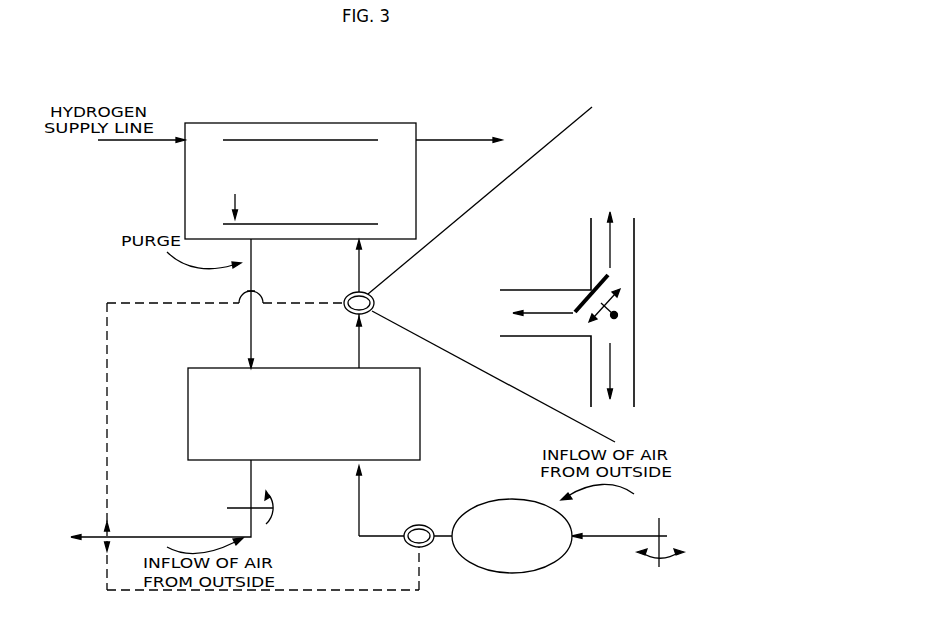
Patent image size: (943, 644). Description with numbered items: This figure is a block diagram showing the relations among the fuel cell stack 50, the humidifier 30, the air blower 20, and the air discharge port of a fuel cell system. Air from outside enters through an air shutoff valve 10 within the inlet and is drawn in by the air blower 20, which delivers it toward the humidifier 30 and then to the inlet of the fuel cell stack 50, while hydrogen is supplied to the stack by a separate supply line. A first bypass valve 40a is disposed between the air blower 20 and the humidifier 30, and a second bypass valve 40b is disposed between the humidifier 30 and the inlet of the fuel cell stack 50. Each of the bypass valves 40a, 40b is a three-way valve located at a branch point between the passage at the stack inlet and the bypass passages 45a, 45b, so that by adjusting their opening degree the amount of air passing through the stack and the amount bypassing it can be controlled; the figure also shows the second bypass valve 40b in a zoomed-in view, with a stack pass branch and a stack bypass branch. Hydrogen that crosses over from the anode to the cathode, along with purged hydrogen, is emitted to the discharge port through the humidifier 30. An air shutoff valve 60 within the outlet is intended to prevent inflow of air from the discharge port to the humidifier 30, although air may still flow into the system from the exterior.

The air shutoff valve within an inlet 10 is at (662, 525).
The air blower 20 is at (512, 499).
The humidifier 30 is at (188, 413).
The first bypass valve 40a is at (420, 525).
The second bypass valve 40b is at (352, 294).
The bypass passage 45a is at (107, 371).
The bypass passage 45b is at (318, 590).
The fuel cell stack 50 is at (352, 123).
The air shutoff valve within an outlet 60 is at (238, 508).